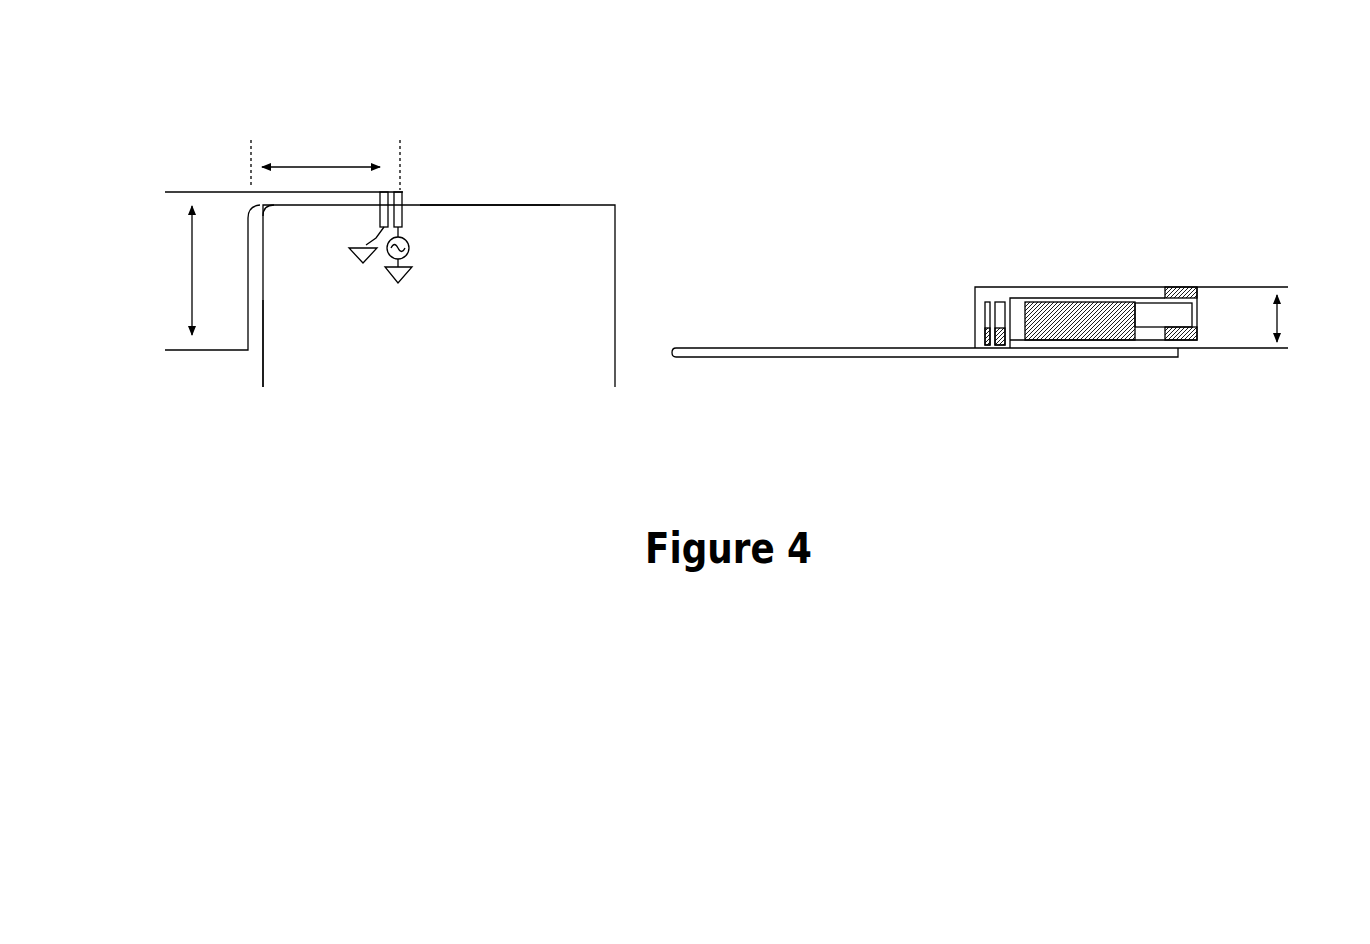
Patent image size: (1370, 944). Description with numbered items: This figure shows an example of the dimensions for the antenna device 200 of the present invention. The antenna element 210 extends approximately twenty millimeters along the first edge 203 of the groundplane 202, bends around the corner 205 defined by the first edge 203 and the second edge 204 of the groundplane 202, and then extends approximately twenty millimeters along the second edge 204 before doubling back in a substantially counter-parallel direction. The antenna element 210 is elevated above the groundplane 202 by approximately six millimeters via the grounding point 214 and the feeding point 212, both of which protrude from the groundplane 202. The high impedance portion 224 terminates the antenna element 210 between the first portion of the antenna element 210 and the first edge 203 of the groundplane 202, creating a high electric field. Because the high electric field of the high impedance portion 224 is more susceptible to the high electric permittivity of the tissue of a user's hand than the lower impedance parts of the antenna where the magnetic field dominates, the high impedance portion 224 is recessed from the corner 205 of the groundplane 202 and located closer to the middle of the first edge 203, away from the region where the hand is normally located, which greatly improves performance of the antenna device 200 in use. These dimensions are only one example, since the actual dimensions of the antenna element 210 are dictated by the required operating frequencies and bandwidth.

The antenna device 200 is at (1192, 262).
The groundplane 202 is at (535, 248).
The first edge 203 is at (458, 205).
The second edge 204 is at (263, 322).
The corner 205 is at (263, 208).
The antenna element 210 is at (247, 217).
The feeding point 212 is at (401, 190).
The grounding point 214 is at (387, 192).
The high impedance portion 224 is at (1100, 320).